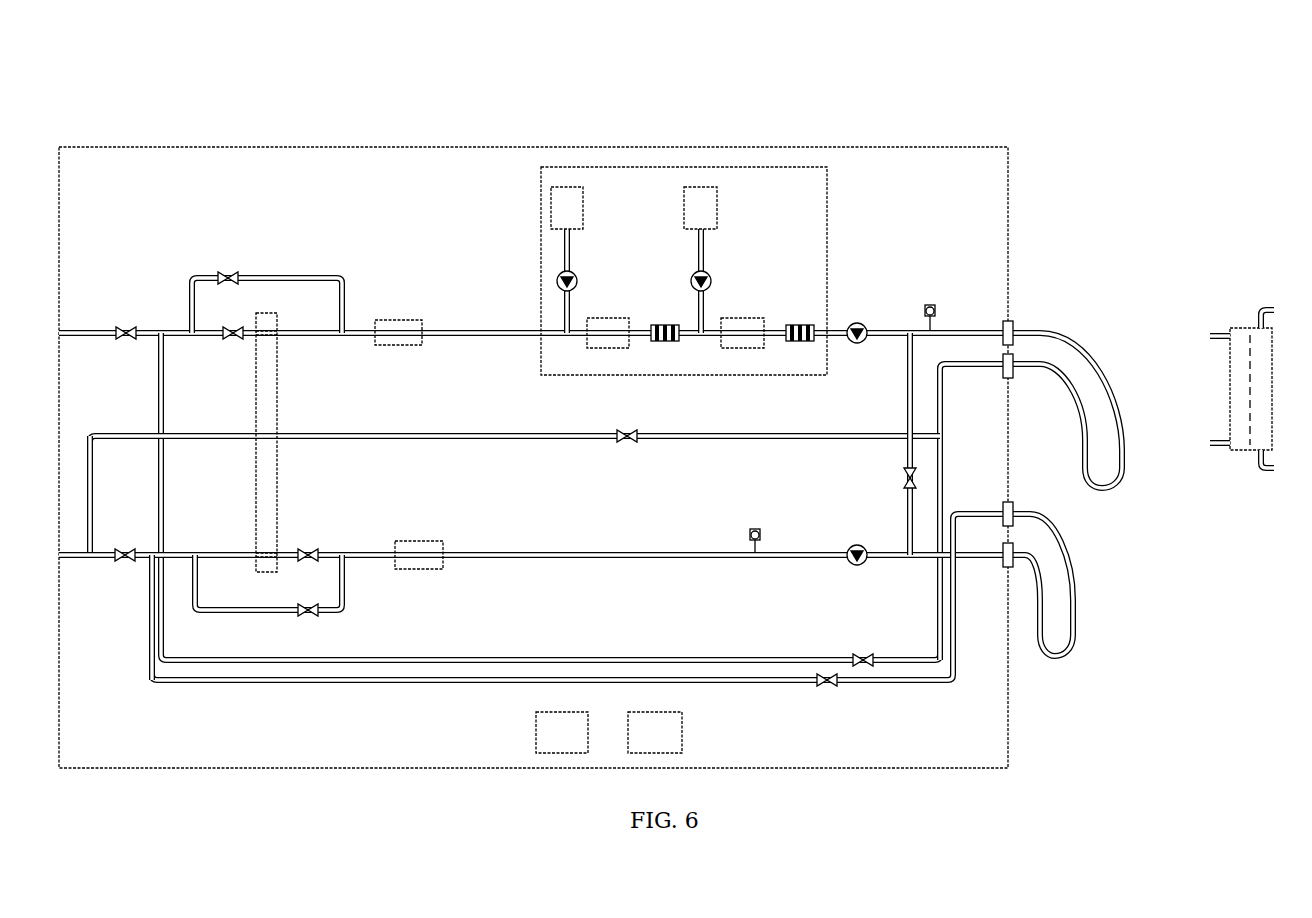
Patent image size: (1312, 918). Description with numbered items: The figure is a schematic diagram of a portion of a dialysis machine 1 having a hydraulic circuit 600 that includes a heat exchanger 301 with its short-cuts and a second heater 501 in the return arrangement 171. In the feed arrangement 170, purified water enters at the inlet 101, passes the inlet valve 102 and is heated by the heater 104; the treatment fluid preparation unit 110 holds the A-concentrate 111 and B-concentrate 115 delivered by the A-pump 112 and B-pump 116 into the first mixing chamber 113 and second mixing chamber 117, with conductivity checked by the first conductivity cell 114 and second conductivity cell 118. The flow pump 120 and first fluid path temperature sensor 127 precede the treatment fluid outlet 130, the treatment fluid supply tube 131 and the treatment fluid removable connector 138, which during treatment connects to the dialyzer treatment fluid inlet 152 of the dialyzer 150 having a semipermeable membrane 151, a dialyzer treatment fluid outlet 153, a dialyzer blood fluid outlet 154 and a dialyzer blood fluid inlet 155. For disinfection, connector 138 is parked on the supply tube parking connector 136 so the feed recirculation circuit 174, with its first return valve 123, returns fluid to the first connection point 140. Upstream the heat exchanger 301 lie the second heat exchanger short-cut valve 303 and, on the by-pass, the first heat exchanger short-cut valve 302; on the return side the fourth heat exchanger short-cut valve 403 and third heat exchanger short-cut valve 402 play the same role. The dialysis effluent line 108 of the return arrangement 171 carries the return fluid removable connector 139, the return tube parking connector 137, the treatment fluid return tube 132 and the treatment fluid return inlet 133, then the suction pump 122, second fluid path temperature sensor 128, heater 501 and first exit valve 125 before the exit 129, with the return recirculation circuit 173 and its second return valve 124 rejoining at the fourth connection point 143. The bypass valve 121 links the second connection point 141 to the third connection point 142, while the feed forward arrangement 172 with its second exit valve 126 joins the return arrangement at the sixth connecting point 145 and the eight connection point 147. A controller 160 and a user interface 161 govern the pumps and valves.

The dialysis machine 1 is at (1062, 104).
The hydraulic circuit 600 is at (832, 147).
The inlet 101 is at (58, 332).
The inlet valve 102 is at (138, 315).
The heater 104 is at (404, 347).
The dialysis effluent line 108 is at (510, 551).
The treatment fluid preparation unit 110 is at (695, 375).
The A-concentrate 111 is at (567, 260).
The A-pump 112 is at (577, 276).
The first mixing chamber 113 is at (608, 333).
The first conductivity cell 114 is at (660, 324).
The B-concentrate 115 is at (700, 260).
The B-pump 116 is at (711, 276).
The second mixing chamber 117 is at (742, 333).
The second conductivity cell 118 is at (796, 324).
The flow pump 120 is at (866, 326).
The bypass valve 121 is at (904, 478).
The suction pump 122 is at (866, 547).
The first return valve 123 is at (868, 652).
The second return valve 124 is at (822, 684).
The first exit valve 125 is at (138, 538).
The second exit valve 126 is at (636, 420).
The first fluid path temperature sensor 127 is at (936, 308).
The second fluid path temperature sensor 128 is at (762, 530).
The exit 129 is at (58, 554).
The treatment fluid outlet 130 is at (1003, 327).
The treatment fluid supply tube 131 is at (1055, 337).
The treatment fluid return tube 132 is at (1076, 641).
The treatment fluid return inlet 133 is at (1003, 548).
The supply tube parking connector 136 is at (1003, 359).
The return tube parking connector 137 is at (1003, 507).
The treatment fluid removable connector 138 is at (1014, 359).
The return fluid removable connector 139 is at (1014, 507).
The first connection point 140 is at (167, 338).
The second connection point 141 is at (905, 340).
The third connection point 142 is at (908, 562).
The fourth connection point 143 is at (150, 562).
The sixth connecting point 145 is at (90, 562).
The eight connection point 147 is at (942, 433).
The dialyzer 150 is at (1274, 372).
The semipermeable membrane 151 is at (1252, 432).
The dialyzer treatment fluid inlet 152 is at (1212, 340).
The dialyzer treatment fluid outlet 153 is at (1212, 447).
The dialyzer blood fluid outlet 154 is at (1272, 303).
The dialyzer blood fluid inlet 155 is at (1278, 465).
The controller 160 is at (562, 732).
The user interface 161 is at (655, 732).
The feed arrangement 170 is at (836, 329).
The return arrangement 171 is at (578, 547).
The feed forward arrangement 172 is at (750, 426).
The return recirculation circuit 173 is at (447, 688).
The feed recirculation circuit 174 is at (532, 650).
The heat exchanger 301 is at (278, 508).
The first heat exchanger short-cut valve 302 is at (243, 263).
The second heat exchanger short-cut valve 303 is at (243, 315).
The third heat exchanger short-cut valve 402 is at (322, 595).
The fourth heat exchanger short-cut valve 403 is at (322, 540).
The second heater 501 is at (420, 570).